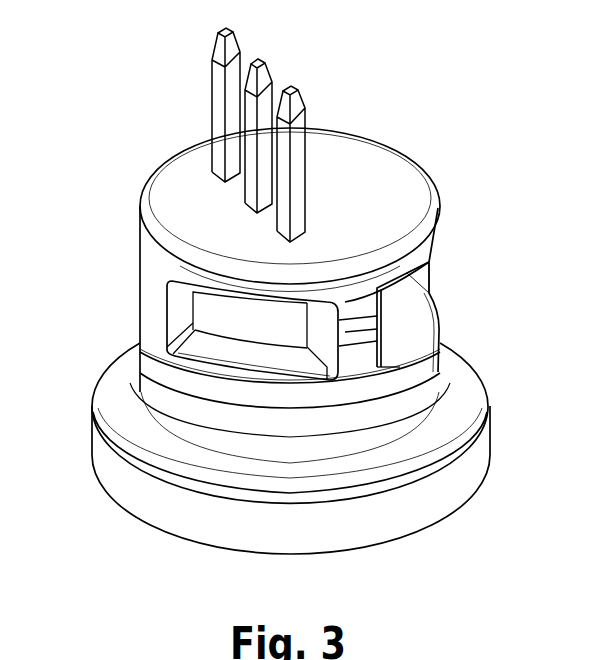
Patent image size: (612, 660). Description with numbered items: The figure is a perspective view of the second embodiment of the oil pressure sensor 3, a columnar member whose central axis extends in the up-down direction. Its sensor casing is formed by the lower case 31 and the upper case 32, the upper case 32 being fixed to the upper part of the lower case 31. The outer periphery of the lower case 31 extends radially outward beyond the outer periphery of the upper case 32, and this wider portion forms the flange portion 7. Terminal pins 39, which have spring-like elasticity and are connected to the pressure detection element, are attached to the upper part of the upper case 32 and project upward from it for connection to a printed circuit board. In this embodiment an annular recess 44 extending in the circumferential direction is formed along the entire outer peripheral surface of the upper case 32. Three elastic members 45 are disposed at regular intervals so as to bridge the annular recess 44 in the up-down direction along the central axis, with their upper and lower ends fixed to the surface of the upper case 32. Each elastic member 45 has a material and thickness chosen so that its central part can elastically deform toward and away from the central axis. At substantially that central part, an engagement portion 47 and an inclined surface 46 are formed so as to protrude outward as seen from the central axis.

The oil pressure sensor 3 is at (283, 296).
The flange portion 7 is at (103, 407).
The lower case 31 is at (410, 500).
The upper case 32 is at (390, 163).
The terminal pins 39 is at (268, 85).
The annular recess 44 is at (393, 297).
The elastic members 45 is at (365, 308).
The inclined surface 46 is at (360, 330).
The engagement portion 47 is at (380, 352).